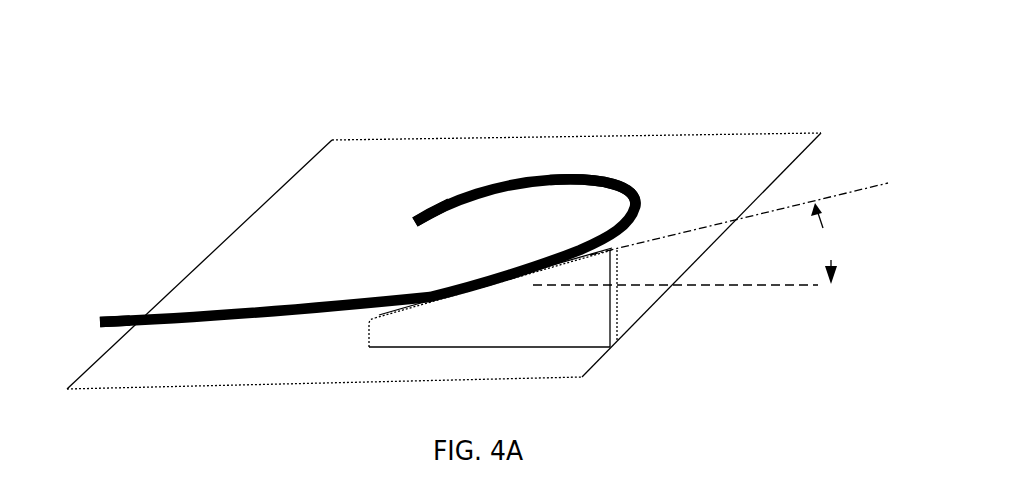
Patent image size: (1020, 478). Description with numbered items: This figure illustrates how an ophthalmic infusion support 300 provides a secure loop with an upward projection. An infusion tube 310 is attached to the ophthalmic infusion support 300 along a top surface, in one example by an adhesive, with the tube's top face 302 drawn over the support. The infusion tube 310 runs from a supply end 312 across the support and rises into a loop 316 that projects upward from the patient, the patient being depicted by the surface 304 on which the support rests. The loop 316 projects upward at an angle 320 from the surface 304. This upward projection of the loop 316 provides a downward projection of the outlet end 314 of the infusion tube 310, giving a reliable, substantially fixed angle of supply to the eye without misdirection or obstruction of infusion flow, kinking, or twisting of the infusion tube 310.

The ophthalmic infusion support 300 is at (557, 322).
The inclined surface of block 302 is at (563, 267).
The surface 304 is at (567, 363).
The infusion tube 310 is at (297, 302).
The supply end 312 is at (105, 315).
The outlet end 314 is at (432, 208).
The loop 316 is at (630, 188).
The angle 320 is at (710, 234).